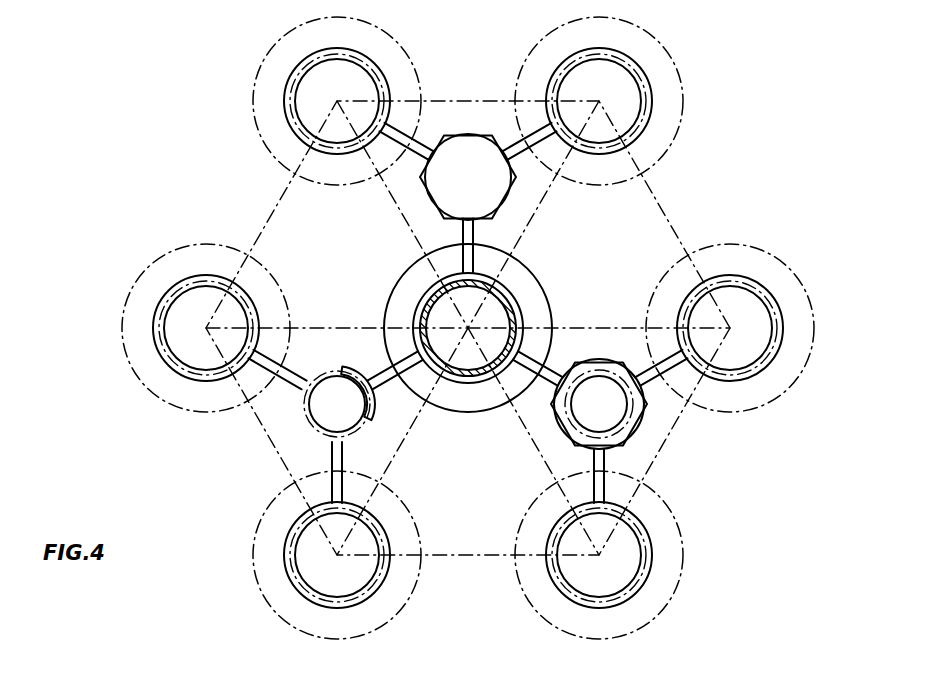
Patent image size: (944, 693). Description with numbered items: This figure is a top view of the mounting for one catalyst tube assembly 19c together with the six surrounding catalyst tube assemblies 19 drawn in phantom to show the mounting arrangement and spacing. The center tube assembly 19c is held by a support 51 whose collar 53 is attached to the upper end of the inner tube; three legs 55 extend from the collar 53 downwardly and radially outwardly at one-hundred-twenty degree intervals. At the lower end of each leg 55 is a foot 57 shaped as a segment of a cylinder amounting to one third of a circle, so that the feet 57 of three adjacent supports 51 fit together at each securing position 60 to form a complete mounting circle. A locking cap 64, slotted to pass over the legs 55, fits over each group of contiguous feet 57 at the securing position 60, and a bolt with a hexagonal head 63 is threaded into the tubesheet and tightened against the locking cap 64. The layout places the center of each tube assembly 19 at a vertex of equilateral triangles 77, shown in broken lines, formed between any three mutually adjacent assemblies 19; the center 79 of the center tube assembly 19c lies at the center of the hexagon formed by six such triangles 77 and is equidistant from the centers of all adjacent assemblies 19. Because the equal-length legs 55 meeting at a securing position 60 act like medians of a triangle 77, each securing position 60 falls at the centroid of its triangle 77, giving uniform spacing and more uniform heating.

The catalyst tube assembly 19 is at (402, 52).
The center tube assembly 19c is at (480, 288).
The support 51 is at (523, 290).
The collar 53 is at (258, 310).
The leg 55 is at (302, 373).
The foot 57 is at (343, 366).
The securing position 60 is at (477, 130).
The hexagonal head 63 is at (607, 385).
The locking cap 64 is at (643, 425).
The equilateral triangle 77 is at (658, 200).
The center of center tube assembly 79 is at (463, 324).